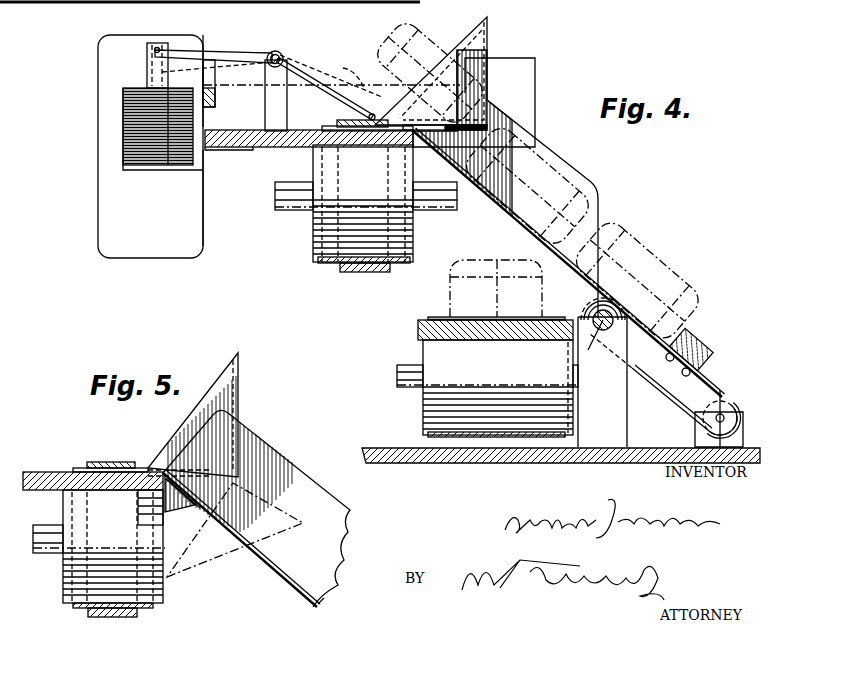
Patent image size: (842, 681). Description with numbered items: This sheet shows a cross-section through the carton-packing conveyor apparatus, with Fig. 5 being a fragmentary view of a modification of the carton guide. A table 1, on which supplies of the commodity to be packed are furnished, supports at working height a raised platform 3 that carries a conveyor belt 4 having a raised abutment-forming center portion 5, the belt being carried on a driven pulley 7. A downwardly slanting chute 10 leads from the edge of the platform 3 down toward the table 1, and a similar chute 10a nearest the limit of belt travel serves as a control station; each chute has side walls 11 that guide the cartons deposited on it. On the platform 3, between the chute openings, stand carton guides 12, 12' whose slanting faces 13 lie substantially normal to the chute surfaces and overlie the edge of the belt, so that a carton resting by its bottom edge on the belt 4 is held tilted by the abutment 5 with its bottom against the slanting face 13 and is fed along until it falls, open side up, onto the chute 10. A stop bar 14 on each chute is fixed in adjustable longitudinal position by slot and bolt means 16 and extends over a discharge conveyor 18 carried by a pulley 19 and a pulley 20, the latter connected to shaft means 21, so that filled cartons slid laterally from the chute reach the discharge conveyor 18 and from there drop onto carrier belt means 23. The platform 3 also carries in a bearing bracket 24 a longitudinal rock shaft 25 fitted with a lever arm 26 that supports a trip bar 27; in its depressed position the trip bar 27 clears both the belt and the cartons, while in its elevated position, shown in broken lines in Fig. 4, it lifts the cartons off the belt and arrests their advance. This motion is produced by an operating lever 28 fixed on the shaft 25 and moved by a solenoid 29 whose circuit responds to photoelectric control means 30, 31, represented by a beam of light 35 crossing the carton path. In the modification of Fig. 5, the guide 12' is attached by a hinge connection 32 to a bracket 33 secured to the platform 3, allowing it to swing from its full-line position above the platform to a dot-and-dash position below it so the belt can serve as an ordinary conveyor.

In FIG. 4, the table 1 is at (445, 466).
In FIG. 4, the platform 3 is at (278, 146).
In FIG. 5, the platform 3 is at (38, 472).
In FIG. 4, the conveyor belt 4 is at (326, 126).
In FIG. 5, the conveyor belt 4 is at (82, 468).
In FIG. 4, the raised abutment-forming center portion 5 is at (346, 118).
In FIG. 5, the raised abutment-forming center portion 5 is at (115, 462).
In FIG. 4, the pulley 7 is at (313, 238).
In FIG. 5, the pulley 7 is at (63, 579).
In FIG. 5, the chute 10 is at (246, 556).
In FIG. 4, the chute 10a is at (495, 198).
In FIG. 4, the side wall 11 is at (580, 168).
In FIG. 4, the carton guide 12 is at (449, 73).
In FIG. 5, the carton guide 12' is at (211, 415).
In FIG. 4, the slanting face 13 is at (478, 22).
In FIG. 4, the stop bar 14 is at (708, 344).
In FIG. 4, the slot and bolt means 16 is at (666, 358).
In FIG. 4, the discharge conveyor 18 is at (730, 398).
In FIG. 4, the pulley 19 is at (712, 398).
In FIG. 4, the pulley 20 is at (590, 308).
In FIG. 4, the shaft means 21 is at (588, 350).
In FIG. 4, the carrier belt means 23 is at (428, 318).
In FIG. 4, the bearing bracket 24 is at (265, 105).
In FIG. 4, the rock shaft 25 is at (281, 53).
In FIG. 4, the lever arm 26 is at (322, 76).
In FIG. 4, the trip bar 27 is at (372, 128).
In FIG. 4, the operating lever 28 is at (242, 58).
In FIG. 4, the solenoid 29 is at (123, 128).
In FIG. 4, the photoelectric control means 30 is at (535, 86).
In FIG. 4, the photoelectric control means 31 is at (103, 210).
In FIG. 5, the hinge connection 32 is at (225, 468).
In FIG. 5, the bracket 33 is at (184, 520).
In FIG. 4, the beam of light 35 is at (353, 68).